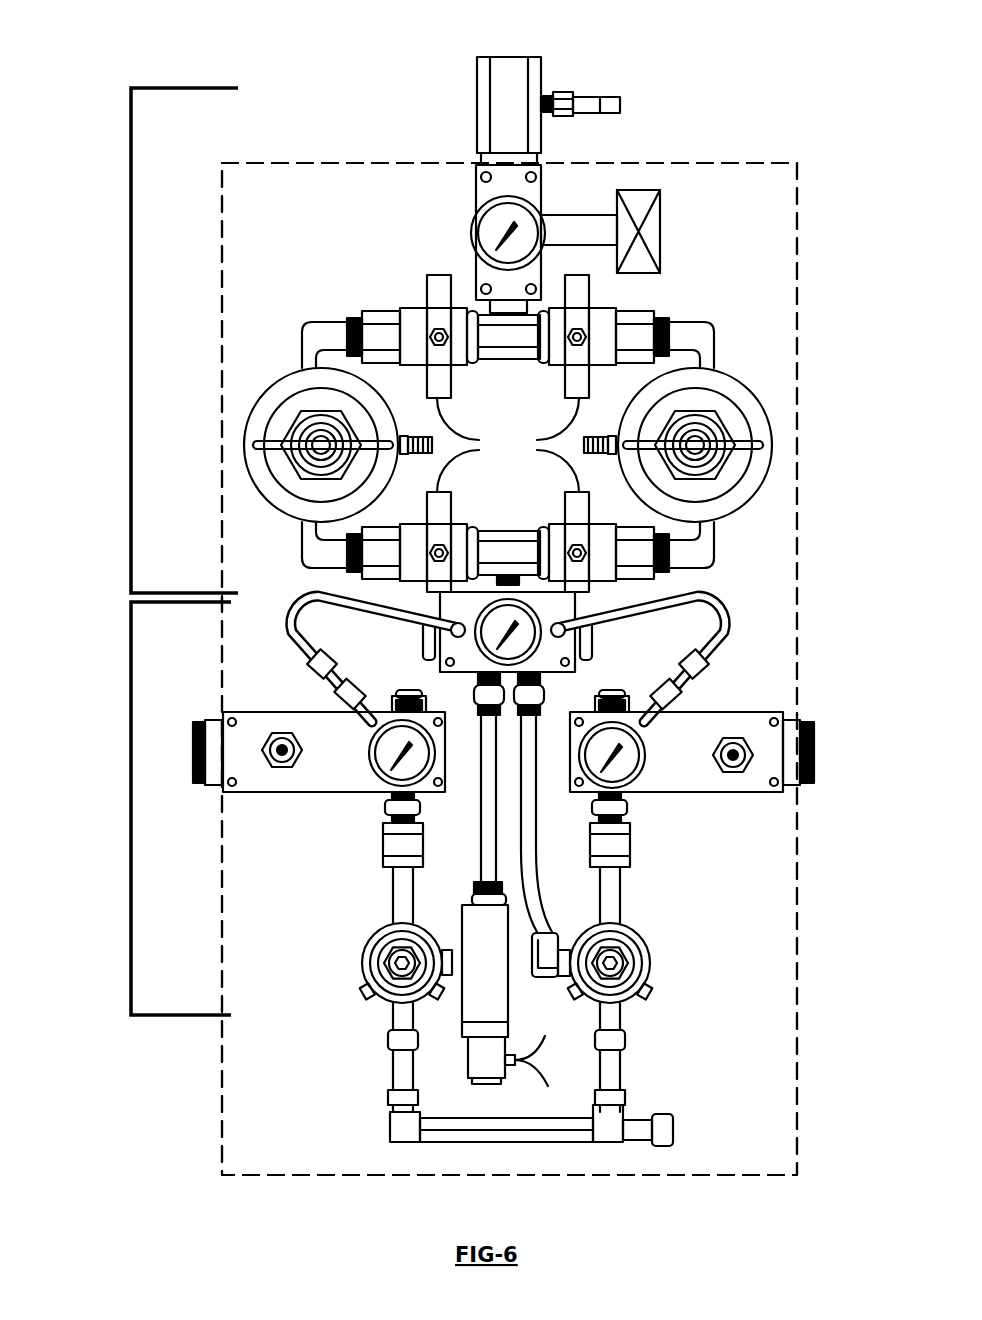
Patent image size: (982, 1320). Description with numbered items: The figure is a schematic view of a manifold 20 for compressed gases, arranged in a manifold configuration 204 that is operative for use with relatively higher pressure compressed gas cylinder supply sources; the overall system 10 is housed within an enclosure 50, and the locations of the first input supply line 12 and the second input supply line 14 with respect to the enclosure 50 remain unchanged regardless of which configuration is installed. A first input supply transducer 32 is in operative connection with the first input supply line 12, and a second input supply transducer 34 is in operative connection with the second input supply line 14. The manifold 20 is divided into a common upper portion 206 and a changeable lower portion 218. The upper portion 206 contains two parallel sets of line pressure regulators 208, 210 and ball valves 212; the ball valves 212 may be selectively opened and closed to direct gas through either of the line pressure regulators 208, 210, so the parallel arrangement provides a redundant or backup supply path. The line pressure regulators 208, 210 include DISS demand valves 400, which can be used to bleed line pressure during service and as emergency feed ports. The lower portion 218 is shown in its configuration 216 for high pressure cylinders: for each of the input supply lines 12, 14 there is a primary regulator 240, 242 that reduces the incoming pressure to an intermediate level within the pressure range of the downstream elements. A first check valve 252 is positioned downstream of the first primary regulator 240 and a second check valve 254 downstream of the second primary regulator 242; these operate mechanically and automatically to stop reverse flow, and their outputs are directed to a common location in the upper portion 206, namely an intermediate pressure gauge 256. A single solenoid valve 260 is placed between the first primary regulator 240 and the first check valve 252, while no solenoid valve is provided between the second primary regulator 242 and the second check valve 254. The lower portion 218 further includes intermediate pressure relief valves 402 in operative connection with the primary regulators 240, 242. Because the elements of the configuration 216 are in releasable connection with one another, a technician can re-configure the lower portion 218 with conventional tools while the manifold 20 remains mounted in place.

The cylinder 10 is at (593, 80).
The manifold 20 is at (758, 146).
The enclosure 50 is at (797, 206).
The first input supply line 12 is at (202, 712).
The second input supply line 14 is at (814, 712).
The first input supply transducer 32 is at (282, 770).
The second input supply transducer 34 is at (732, 778).
The manifold configuration 204 is at (780, 298).
The upper portion 206 is at (131, 337).
The line pressure regulator 208 is at (290, 370).
The line pressure regulator 210 is at (734, 366).
The ball valves 212 is at (508, 495).
The configuration of the lower portion 216 is at (248, 1050).
The lower portion 218 is at (131, 797).
The first primary regulator 240 is at (368, 1002).
The second primary regulator 242 is at (648, 972).
The first check valve 252 is at (470, 692).
The second check valve 254 is at (577, 682).
The intermediate pressure gauge 256 is at (662, 598).
The solenoid valve 260 is at (462, 916).
The DISS demand valves 400 is at (425, 438).
The intermediate pressure relief valves 402 is at (596, 1112).